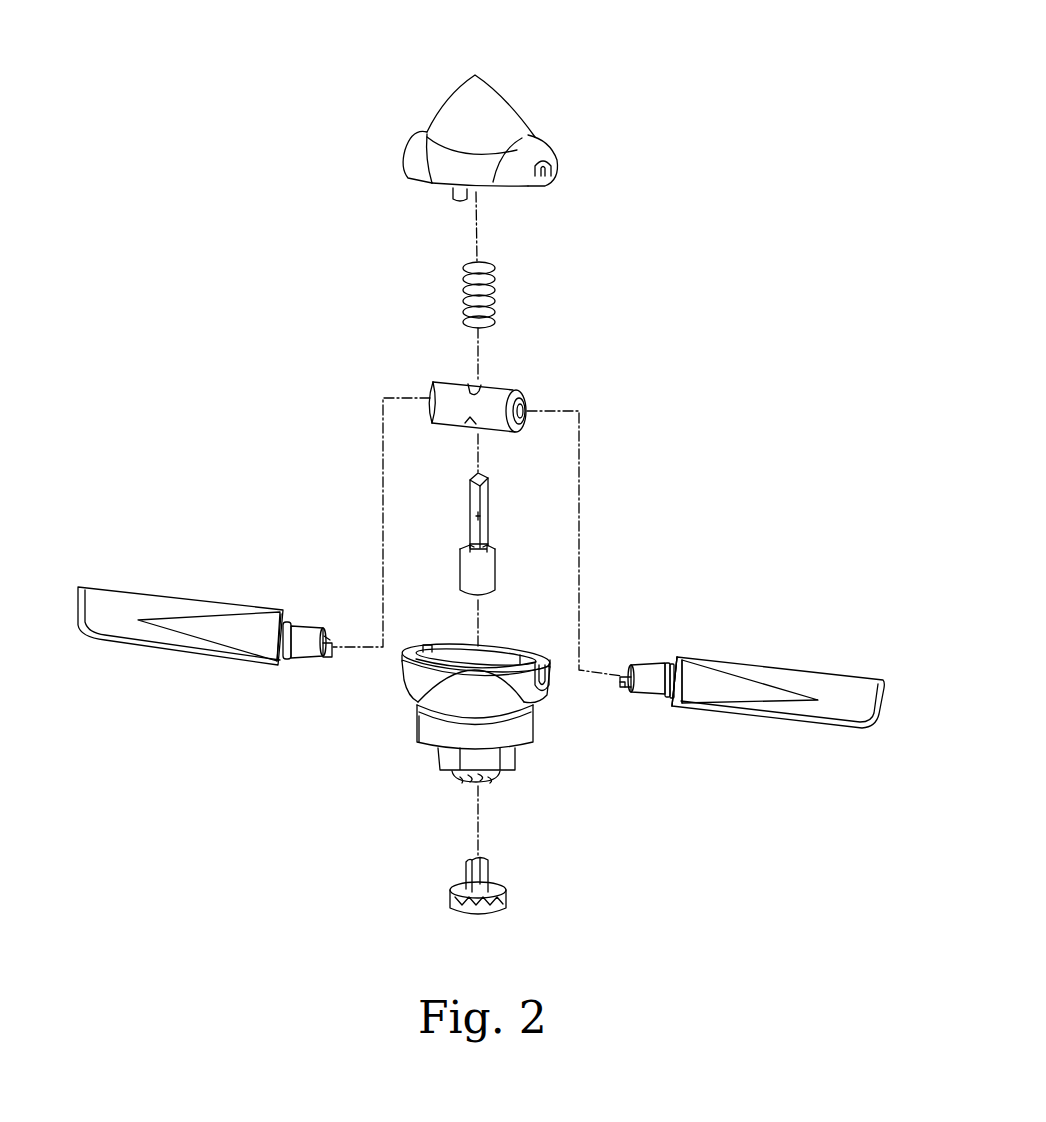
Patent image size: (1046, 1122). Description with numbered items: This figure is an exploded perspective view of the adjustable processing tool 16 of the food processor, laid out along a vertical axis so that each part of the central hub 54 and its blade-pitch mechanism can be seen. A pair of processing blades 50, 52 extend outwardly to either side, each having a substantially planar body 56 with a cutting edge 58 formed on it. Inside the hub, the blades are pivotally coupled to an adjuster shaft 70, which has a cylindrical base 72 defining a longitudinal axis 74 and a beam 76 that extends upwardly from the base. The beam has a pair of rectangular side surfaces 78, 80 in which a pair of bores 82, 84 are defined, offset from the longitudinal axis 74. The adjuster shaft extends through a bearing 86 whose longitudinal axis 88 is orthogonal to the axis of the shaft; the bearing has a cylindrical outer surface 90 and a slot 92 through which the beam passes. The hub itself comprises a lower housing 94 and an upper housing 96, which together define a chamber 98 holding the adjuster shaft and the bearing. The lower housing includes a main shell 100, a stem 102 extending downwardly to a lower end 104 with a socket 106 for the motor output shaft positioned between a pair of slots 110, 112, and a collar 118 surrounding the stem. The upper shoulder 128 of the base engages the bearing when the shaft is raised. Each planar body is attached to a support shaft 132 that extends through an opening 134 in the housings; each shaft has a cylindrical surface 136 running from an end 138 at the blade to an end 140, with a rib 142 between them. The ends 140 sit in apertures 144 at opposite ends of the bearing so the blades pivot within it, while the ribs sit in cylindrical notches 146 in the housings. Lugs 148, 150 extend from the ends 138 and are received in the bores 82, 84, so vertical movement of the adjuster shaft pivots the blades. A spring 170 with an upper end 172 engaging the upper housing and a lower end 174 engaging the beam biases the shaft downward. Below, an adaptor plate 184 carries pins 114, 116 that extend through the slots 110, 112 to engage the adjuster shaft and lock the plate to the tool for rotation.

The adjustable processing tool 16 is at (755, 68).
The processing blade 50 is at (481, 666).
The processing blade 52 is at (104, 630).
The central hub 54 is at (458, 713).
The planar body 56 is at (103, 594).
The cutting edge 58 is at (167, 652).
The adjuster shaft 70 is at (512, 513).
The cylindrical base 72 is at (468, 566).
The longitudinal axis 74 is at (483, 630).
The beam 76 is at (486, 487).
The rectangular side surface 78 is at (486, 541).
The rectangular side surface 80 is at (469, 508).
The bore 82 is at (481, 517).
The bore 84 is at (469, 494).
The bearing 86 is at (503, 376).
The longitudinal axis 88 is at (549, 410).
The cylindrical outer surface 90 is at (443, 383).
The slot 92 is at (484, 380).
The lower housing 94 is at (530, 720).
The upper housing 96 is at (495, 102).
The chamber 98 is at (553, 643).
The main shell 100 is at (465, 649).
The stem 102 is at (438, 754).
The lower end 104 is at (482, 802).
The socket 106 is at (469, 788).
The slot 110 is at (490, 788).
The slot 112 is at (460, 786).
The pin 114 is at (489, 877).
The pin 116 is at (466, 871).
The collar 118 is at (420, 730).
The upper shoulder 128 is at (462, 547).
The support shaft 132 is at (316, 628).
The opening 134 is at (562, 690).
The cylindrical surface 136 is at (652, 697).
The end 138 is at (698, 675).
The end 140 is at (620, 683).
The rib 142 is at (672, 663).
The aperture 144 is at (585, 409).
The cylindrical notch 146 is at (531, 650).
The lug 148 is at (626, 690).
The lug 150 is at (327, 658).
The spring 170 is at (507, 276).
The upper end 172 is at (470, 276).
The lower end 174 is at (463, 326).
The adaptor plate 184 is at (494, 886).